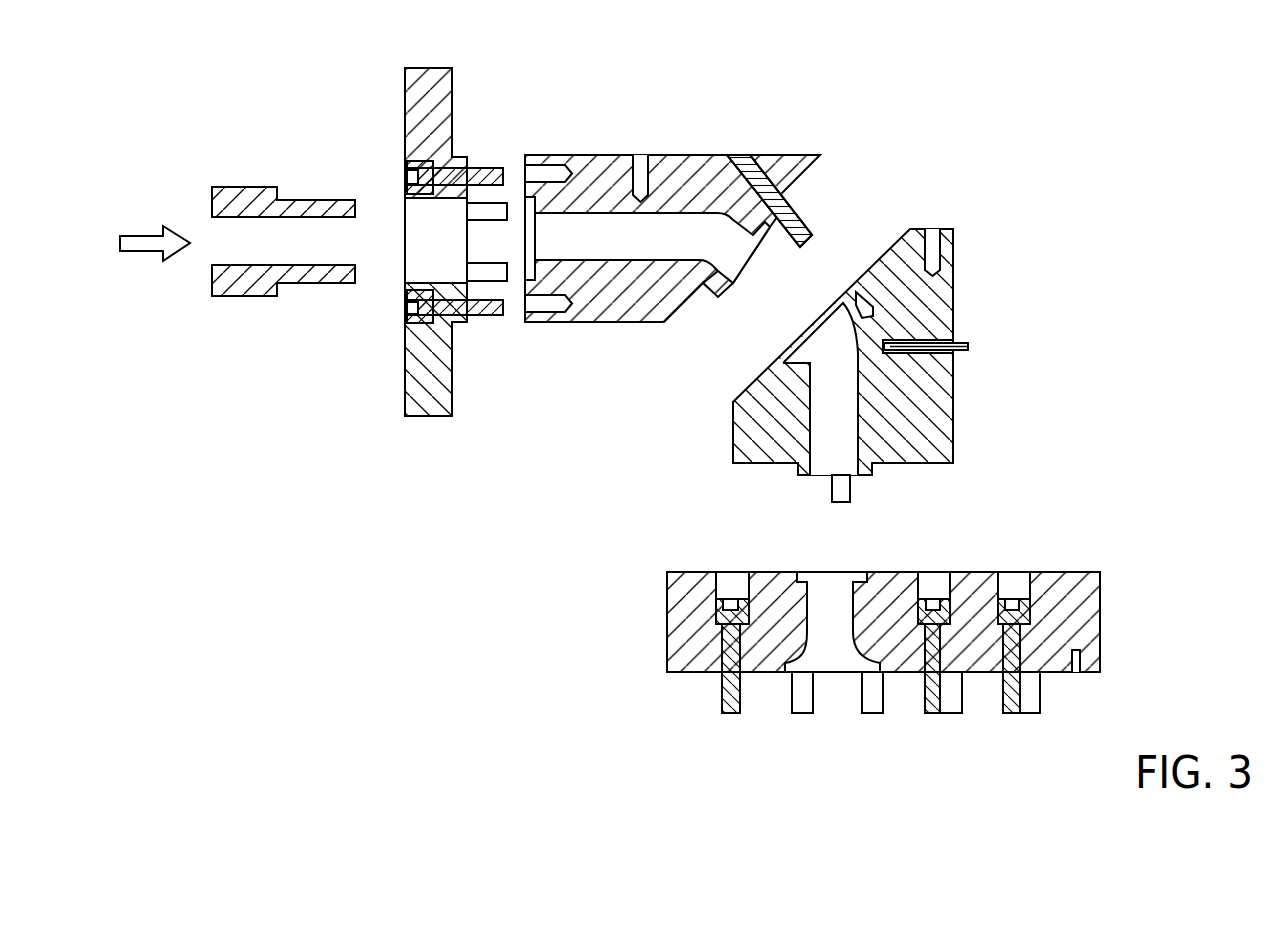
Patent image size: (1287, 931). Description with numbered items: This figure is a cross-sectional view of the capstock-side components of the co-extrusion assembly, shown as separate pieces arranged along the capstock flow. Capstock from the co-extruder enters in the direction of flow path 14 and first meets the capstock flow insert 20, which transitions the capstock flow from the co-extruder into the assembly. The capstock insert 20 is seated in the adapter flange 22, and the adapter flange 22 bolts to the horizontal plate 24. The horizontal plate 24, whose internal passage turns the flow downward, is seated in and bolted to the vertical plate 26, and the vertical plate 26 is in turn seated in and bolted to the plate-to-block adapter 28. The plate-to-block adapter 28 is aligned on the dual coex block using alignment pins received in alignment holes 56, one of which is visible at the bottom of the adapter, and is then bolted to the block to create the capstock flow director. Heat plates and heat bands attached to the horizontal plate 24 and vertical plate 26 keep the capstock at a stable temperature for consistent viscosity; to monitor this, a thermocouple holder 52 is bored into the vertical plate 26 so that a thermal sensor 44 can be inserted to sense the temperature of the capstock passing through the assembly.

The flow path 14 is at (150, 253).
The capstock flow insert 20 is at (245, 297).
The adapter flange 22 is at (436, 67).
The horizontal plate 24 is at (789, 152).
The vertical plate 26 is at (957, 288).
The plate-to-block adapter 28 is at (1090, 572).
The thermal sensor 44 is at (968, 348).
The thermocouple holder 52 is at (883, 342).
The alignment hole 56 is at (1078, 673).